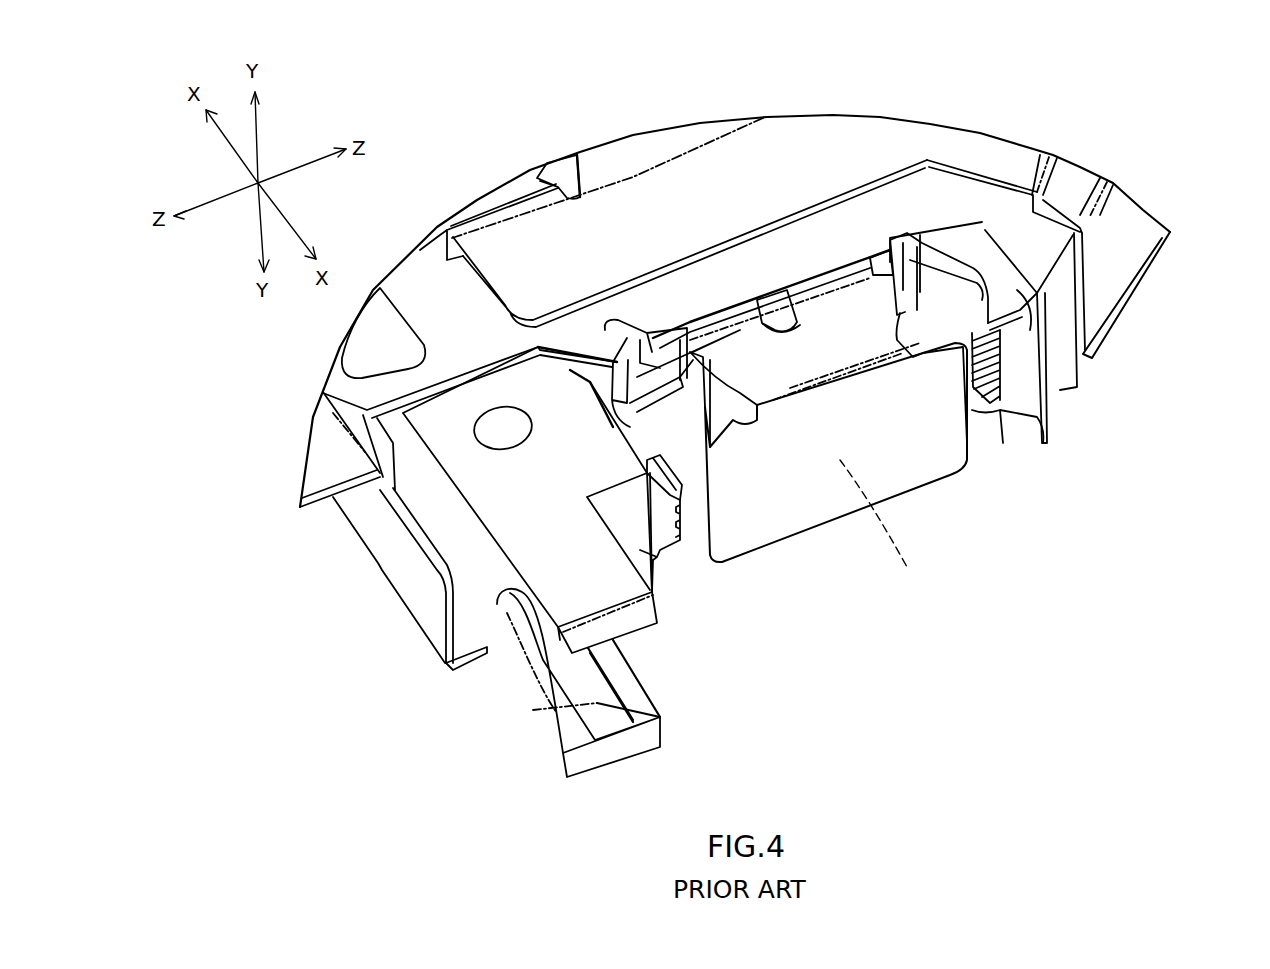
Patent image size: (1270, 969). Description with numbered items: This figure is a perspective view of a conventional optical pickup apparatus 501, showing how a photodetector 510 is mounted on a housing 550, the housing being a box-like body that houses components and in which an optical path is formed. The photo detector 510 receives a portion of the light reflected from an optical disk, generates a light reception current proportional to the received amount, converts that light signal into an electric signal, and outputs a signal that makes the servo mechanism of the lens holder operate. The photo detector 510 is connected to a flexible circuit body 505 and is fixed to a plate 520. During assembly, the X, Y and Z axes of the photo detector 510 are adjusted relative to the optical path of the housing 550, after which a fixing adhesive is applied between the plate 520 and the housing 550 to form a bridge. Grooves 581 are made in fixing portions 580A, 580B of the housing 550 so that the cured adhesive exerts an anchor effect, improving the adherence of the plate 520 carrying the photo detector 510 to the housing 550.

The optical pickup apparatus 501 is at (735, 392).
The flexible circuit body 505 is at (925, 458).
The photodetector 510 is at (890, 530).
The plate 520 is at (687, 513).
The housing 550 is at (474, 680).
The fixing portion 580A is at (995, 420).
The fixing portion 580B is at (670, 553).
The grooves 581 is at (1000, 363).